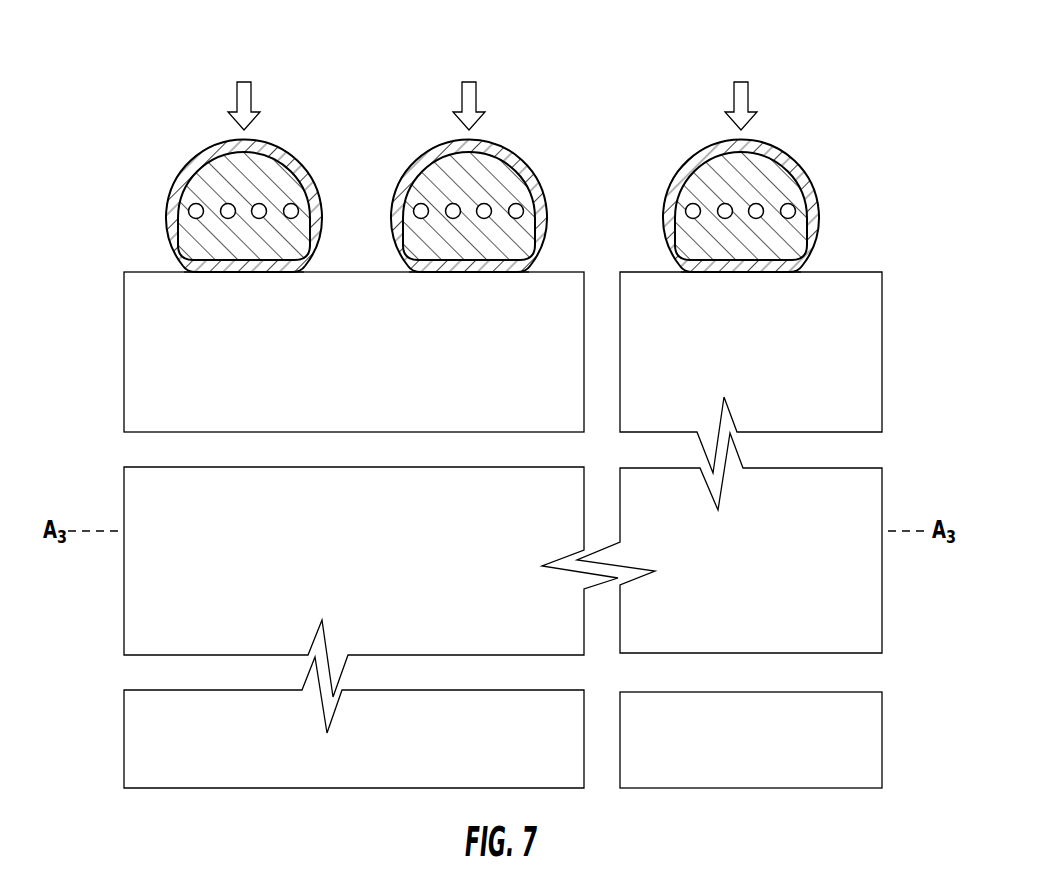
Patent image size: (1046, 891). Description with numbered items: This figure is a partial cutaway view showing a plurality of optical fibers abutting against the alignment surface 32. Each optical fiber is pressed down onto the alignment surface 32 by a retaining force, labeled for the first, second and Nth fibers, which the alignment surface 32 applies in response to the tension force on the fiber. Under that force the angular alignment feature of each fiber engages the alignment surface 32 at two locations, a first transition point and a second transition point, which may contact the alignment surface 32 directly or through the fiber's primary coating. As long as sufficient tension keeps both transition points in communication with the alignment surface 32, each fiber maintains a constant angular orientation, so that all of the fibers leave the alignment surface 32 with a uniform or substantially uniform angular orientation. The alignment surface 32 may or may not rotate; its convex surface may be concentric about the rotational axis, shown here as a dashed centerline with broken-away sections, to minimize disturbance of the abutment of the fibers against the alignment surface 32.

The alignment surface 32 is at (147, 270).